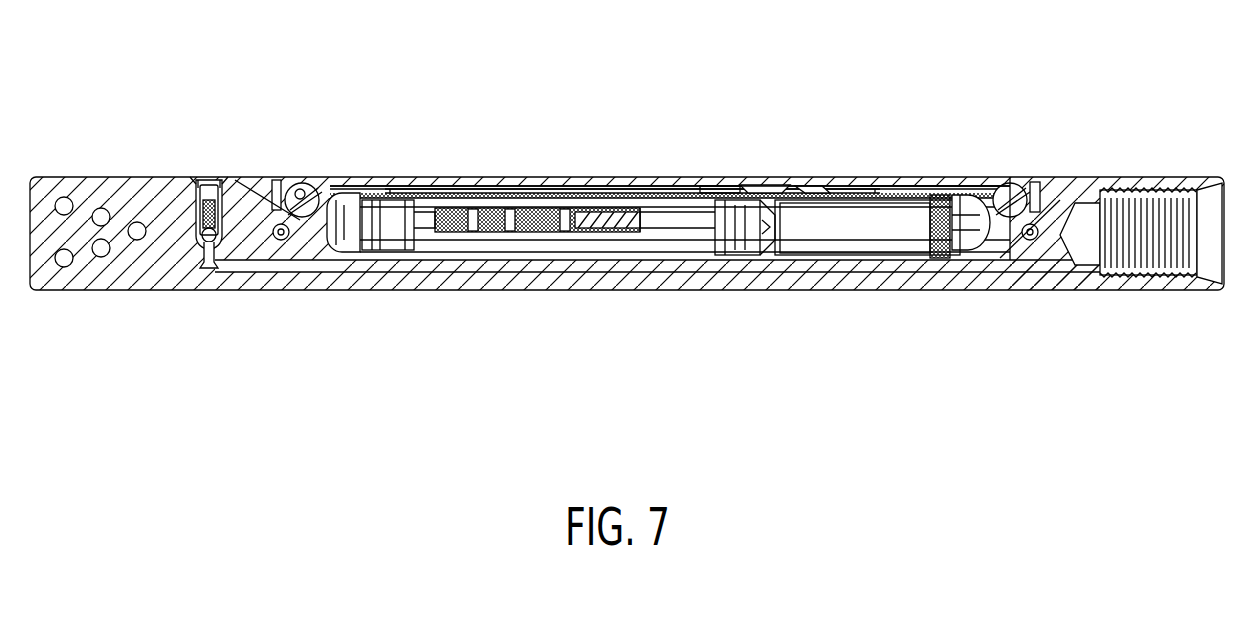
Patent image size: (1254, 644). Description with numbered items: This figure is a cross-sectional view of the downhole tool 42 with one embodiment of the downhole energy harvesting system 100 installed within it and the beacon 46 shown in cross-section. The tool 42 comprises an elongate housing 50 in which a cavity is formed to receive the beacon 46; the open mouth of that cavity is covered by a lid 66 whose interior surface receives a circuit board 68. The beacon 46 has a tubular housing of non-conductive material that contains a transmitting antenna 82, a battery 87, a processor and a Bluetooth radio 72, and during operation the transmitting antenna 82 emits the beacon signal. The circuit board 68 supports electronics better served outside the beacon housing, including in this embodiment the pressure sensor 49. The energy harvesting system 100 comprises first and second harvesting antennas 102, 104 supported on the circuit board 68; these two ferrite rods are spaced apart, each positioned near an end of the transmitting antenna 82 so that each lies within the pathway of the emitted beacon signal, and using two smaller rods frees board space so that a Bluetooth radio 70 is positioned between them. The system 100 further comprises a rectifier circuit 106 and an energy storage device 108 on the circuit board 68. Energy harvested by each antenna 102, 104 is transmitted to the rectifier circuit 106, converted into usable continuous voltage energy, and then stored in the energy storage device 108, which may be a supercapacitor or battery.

The downhole tool 42 is at (577, 328).
The beacon 46 is at (702, 248).
The pressure sensor 49 is at (790, 185).
The housing 50 is at (277, 276).
The lid 66 is at (923, 185).
The circuit board 68 is at (487, 177).
The Bluetooth radio 70 is at (557, 177).
The Bluetooth radio 72 is at (585, 238).
The transmitting antenna 82 is at (568, 223).
The battery 87 is at (853, 238).
The downhole energy harvesting system 100 is at (507, 113).
The first harvesting antenna 102 is at (413, 177).
The second harvesting antenna 104 is at (727, 183).
The rectifier circuit 106 is at (760, 185).
The energy storage device 108 is at (812, 185).